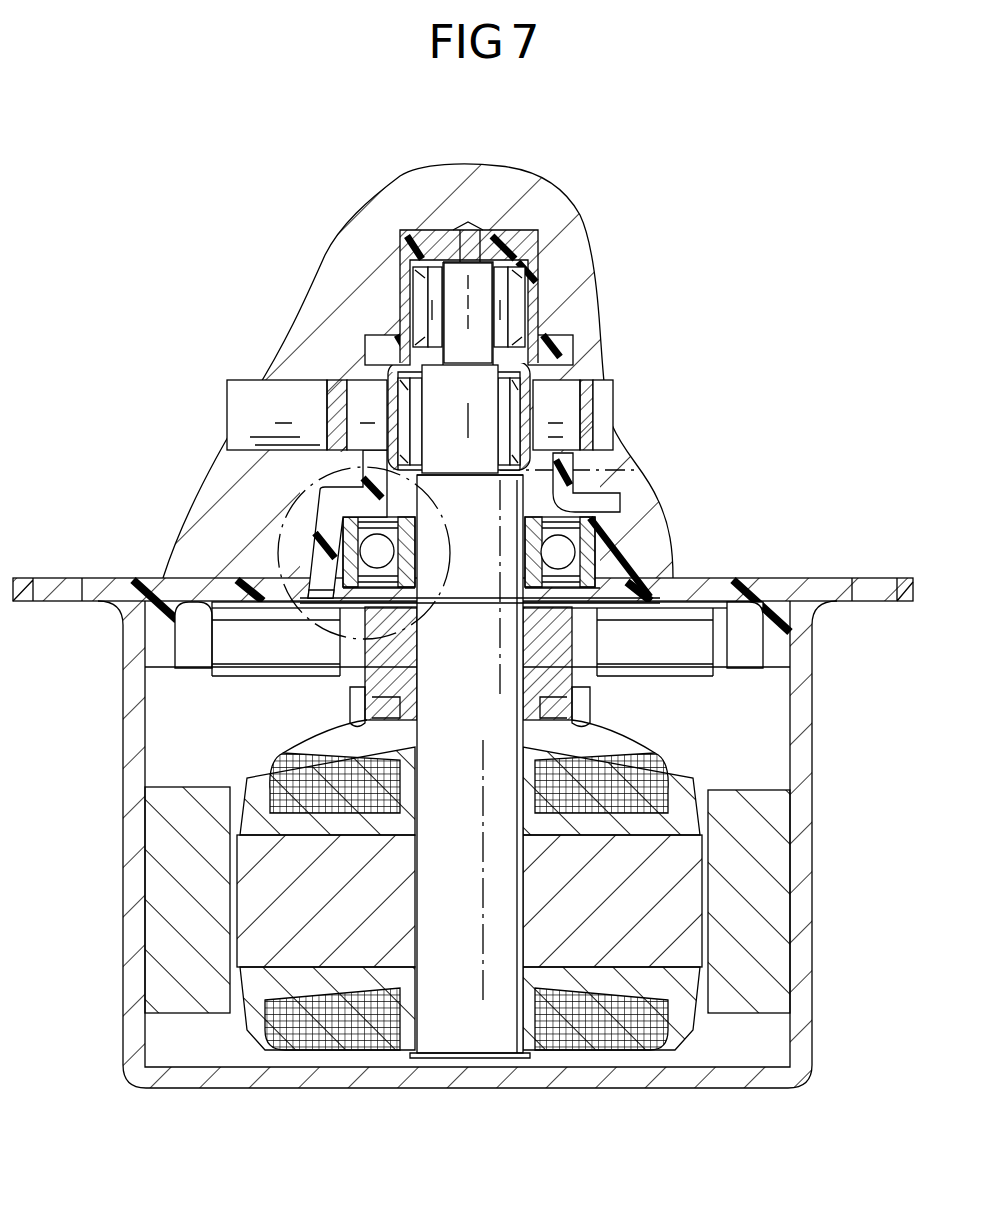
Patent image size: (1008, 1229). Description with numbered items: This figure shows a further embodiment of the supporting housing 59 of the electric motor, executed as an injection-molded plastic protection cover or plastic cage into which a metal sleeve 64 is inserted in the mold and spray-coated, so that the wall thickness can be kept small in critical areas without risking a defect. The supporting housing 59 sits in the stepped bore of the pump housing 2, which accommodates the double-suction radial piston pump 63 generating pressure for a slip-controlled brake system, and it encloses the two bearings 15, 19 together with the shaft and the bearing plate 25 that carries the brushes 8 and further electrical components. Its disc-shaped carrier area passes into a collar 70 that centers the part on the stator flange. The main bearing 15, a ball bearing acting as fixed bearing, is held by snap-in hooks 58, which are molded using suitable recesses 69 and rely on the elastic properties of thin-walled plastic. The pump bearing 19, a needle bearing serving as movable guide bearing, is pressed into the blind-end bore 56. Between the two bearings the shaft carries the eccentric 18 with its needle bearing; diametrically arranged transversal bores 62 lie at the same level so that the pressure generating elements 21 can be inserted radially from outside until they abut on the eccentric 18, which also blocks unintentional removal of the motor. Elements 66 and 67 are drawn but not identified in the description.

The pump housing 2 is at (497, 192).
The brushes 8 is at (700, 665).
The main bearing 15 is at (615, 512).
The eccentric 18 is at (437, 412).
The pump bearing 19 is at (507, 291).
The pressure generating elements 21 is at (597, 409).
The bearing plate 25 is at (185, 584).
The blind-end bore 56 is at (405, 370).
The snap-in hooks 58 is at (292, 572).
The supporting housing 59 is at (545, 347).
The transversal bores 62 is at (527, 366).
The double-suction radial piston pump 63 is at (245, 393).
The metal sleeve 64 is at (533, 273).
The bearing plate 66 is at (618, 585).
The lower ball bearing 67 is at (605, 537).
The recesses 69 is at (278, 575).
The collar 70 is at (160, 643).